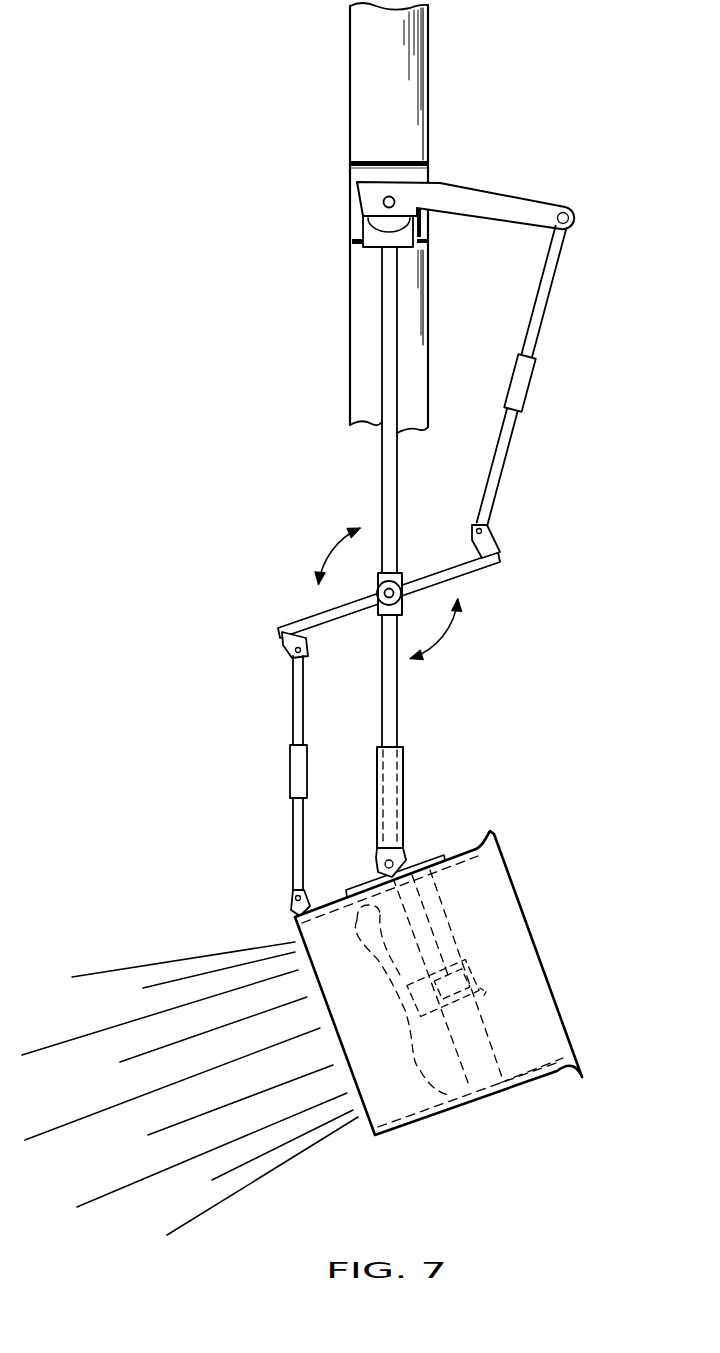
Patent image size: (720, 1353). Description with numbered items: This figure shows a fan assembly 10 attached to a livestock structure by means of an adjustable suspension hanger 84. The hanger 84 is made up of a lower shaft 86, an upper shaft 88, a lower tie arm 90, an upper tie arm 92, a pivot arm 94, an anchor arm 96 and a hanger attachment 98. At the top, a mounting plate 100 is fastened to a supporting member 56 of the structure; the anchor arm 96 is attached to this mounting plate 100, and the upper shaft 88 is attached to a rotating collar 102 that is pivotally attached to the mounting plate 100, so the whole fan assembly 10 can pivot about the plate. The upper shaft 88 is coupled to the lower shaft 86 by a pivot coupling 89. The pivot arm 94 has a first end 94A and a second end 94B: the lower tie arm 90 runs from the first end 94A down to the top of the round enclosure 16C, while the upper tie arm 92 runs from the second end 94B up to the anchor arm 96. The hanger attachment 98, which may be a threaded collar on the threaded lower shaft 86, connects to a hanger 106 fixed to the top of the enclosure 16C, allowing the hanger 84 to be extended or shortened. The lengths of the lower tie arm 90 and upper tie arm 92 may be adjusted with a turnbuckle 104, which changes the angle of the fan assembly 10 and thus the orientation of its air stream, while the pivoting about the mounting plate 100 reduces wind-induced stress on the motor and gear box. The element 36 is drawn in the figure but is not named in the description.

The supporting member 56 is at (430, 70).
The mounting plate 100 is at (420, 173).
The rotating collar 102 is at (363, 219).
The anchor arm 96 is at (530, 202).
The upper tie arm 92 is at (542, 325).
The turnbuckle 104 is at (528, 385).
The upper shaft 88 is at (380, 483).
The adjustable suspension hanger 84 is at (408, 549).
The pivot arm 94 is at (443, 582).
The first end of pivot arm 94A is at (278, 632).
The second end of pivot arm 94B is at (500, 556).
The pivot coupling 89 is at (402, 573).
The lower tie arm 90 is at (293, 727).
The lower shaft 86 is at (398, 727).
The hanger attachment 98 is at (378, 785).
The hanger 106 is at (405, 862).
The fan assembly 10 is at (459, 960).
The round enclosure 16C is at (520, 1087).
The nozzle mechanism 36 is at (429, 1029).